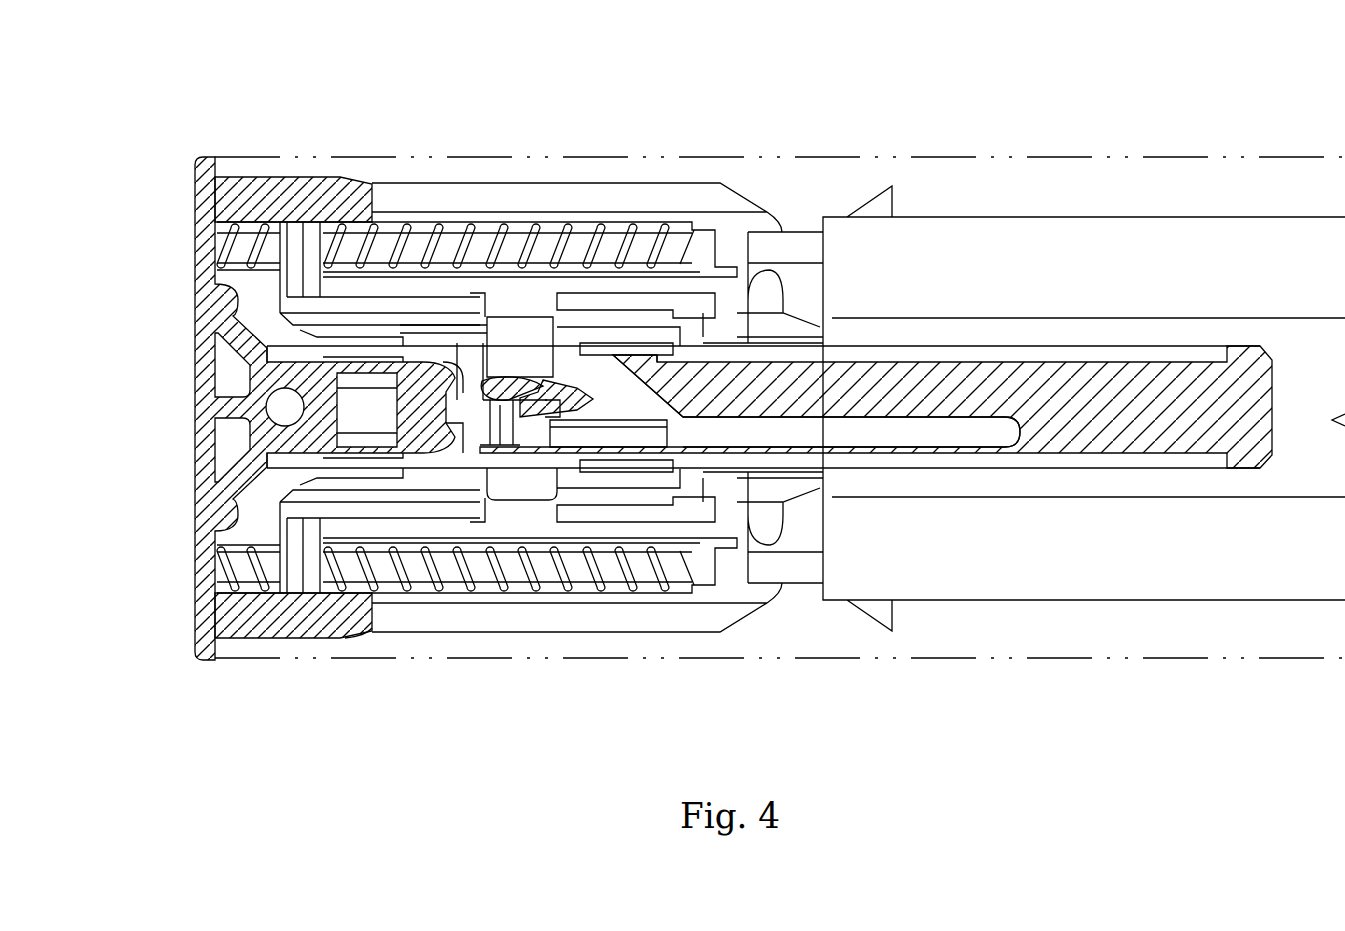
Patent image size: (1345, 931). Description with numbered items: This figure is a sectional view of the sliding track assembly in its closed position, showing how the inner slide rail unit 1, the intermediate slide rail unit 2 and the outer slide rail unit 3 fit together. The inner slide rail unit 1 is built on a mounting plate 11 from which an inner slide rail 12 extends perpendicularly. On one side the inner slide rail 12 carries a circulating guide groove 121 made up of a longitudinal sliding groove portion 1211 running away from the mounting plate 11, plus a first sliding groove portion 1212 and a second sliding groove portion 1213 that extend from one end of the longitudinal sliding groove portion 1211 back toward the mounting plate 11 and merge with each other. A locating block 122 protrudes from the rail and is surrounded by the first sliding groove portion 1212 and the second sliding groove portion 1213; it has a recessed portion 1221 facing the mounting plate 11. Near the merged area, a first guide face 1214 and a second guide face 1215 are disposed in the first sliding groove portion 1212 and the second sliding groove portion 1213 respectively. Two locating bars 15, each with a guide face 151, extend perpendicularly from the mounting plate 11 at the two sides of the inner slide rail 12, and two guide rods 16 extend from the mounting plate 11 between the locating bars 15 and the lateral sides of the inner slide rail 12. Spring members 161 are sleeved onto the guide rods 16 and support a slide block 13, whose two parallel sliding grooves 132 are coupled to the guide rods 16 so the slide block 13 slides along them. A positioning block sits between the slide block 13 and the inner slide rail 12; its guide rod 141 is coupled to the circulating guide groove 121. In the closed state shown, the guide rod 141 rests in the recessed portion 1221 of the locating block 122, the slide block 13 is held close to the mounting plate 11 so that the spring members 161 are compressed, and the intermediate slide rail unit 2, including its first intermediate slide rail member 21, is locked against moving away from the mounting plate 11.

The inner slide rail unit 1 is at (153, 379).
The mounting plate 11 is at (195, 317).
The inner slide rail 12 is at (1143, 385).
The circulating guide groove 121 is at (647, 390).
The longitudinal sliding groove portion 1211 is at (872, 433).
The first sliding groove portion 1212 is at (590, 377).
The second sliding groove portion 1213 is at (578, 435).
The first guide face 1214 is at (460, 445).
The second guide face 1215 is at (458, 445).
The locating block 122 is at (567, 400).
The recessed portion 1221 is at (550, 383).
The slide block 13 is at (322, 312).
The sliding grooves 132 is at (385, 228).
The guide rod 141 is at (513, 383).
The locating bars 15 is at (274, 625).
The guide face 151 is at (355, 638).
The guide rods 16 is at (397, 573).
The spring members 161 is at (413, 587).
The intermediate slide rail unit 2 is at (1084, 460).
The first intermediate slide rail member 21 is at (1200, 580).
The outer slide rail unit 3 is at (1004, 146).